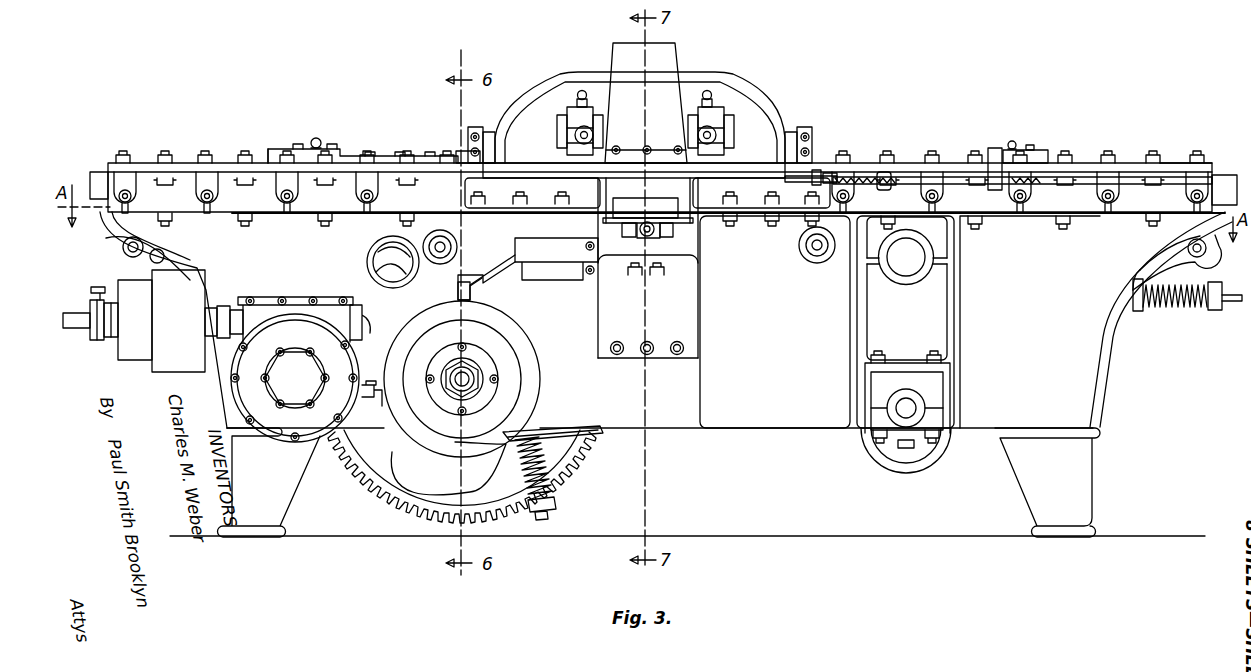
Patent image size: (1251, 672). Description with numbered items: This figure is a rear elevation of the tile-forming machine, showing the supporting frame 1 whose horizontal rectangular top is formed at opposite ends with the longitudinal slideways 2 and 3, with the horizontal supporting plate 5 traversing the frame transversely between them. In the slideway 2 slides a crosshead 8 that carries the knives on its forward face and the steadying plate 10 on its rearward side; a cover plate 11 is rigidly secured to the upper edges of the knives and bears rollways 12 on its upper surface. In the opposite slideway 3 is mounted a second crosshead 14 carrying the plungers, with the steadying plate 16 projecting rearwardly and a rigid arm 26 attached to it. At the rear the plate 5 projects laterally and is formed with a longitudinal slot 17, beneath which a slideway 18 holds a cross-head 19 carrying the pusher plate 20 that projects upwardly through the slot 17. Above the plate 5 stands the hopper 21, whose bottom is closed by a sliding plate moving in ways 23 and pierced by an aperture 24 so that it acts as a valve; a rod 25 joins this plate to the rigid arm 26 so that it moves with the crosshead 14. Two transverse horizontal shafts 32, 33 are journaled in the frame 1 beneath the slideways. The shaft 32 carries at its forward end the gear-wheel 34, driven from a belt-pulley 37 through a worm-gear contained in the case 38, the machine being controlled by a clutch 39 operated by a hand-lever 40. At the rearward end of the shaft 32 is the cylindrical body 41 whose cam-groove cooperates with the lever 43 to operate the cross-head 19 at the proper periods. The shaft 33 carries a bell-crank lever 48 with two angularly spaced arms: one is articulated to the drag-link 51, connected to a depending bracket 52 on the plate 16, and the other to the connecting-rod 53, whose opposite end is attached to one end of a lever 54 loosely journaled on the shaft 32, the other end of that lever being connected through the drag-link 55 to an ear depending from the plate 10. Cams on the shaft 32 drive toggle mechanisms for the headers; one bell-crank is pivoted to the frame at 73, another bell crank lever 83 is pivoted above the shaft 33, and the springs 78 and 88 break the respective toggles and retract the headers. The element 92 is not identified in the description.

The supporting frame 1 is at (666, 374).
The longitudinal slideway 2 is at (1203, 168).
The longitudinal slideway 3 is at (108, 166).
The horizontal supporting plate 5 is at (674, 230).
The crosshead 8 is at (282, 150).
The steadying plate 10 is at (92, 170).
The cover plate 11 is at (352, 160).
The rollways 12 is at (425, 160).
The second crosshead 14 is at (1040, 152).
The steadying plate 16 is at (1231, 178).
The longitudinal slot 17 is at (668, 238).
The slideway 18 is at (622, 232).
The cross-head 19 is at (648, 238).
The pusher plate 20 is at (645, 209).
The hopper 21 is at (672, 62).
The ways 23 is at (750, 170).
The aperture 24 is at (800, 183).
The rod 25 is at (925, 178).
The rigid arm 26 is at (995, 150).
The transverse horizontal shaft 32 is at (480, 375).
The transverse horizontal shaft 33 is at (908, 408).
The gear-wheel 34 is at (372, 478).
The belt-pulley 37 is at (180, 321).
The case 38 is at (306, 369).
The clutch 39 is at (139, 355).
The hand-lever 40 is at (89, 281).
The cylindrical body 41 is at (527, 406).
The lever 43 is at (505, 266).
The bell-crank lever 48 is at (886, 450).
The drag-link 51 is at (1152, 264).
The depending bracket 52 is at (1192, 205).
The connecting-rod 53 is at (598, 437).
The lever 54 is at (458, 472).
The drag-link 55 is at (160, 262).
The pivot 73 is at (440, 264).
The spring 78 is at (547, 472).
The bell crank lever 83 is at (814, 262).
The spring 88 is at (1188, 308).
The bearing block 92 is at (718, 136).